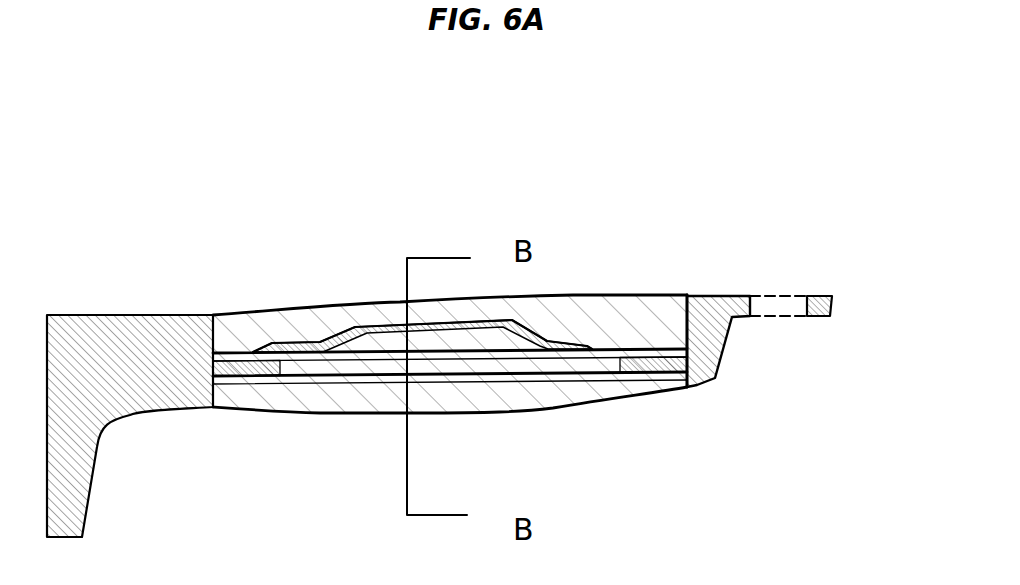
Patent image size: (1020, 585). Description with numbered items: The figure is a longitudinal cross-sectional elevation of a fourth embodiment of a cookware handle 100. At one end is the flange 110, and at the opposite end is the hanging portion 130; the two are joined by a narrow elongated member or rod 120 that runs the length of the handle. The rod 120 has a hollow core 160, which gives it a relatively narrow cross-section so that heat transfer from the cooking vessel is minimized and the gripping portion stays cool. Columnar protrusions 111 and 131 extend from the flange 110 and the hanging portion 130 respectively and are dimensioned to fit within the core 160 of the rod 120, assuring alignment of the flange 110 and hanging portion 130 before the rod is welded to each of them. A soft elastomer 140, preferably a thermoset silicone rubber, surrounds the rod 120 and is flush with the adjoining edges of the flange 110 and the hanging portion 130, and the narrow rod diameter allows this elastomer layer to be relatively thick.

The handle 100 is at (583, 118).
The flange 110 is at (133, 315).
The columnar protrusion 111 is at (240, 381).
The rod 120 is at (450, 392).
The hanging portion 130 is at (790, 296).
The columnar protrusion 131 is at (653, 363).
The soft elastomer 140 is at (457, 300).
The hollow core 160 is at (550, 342).